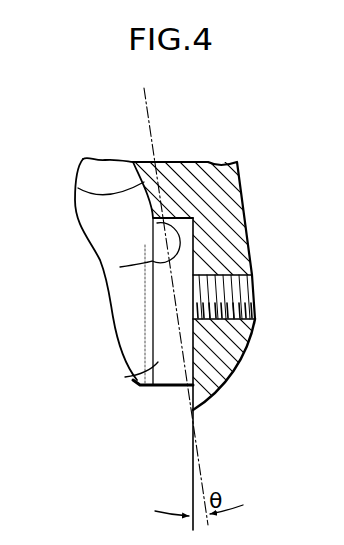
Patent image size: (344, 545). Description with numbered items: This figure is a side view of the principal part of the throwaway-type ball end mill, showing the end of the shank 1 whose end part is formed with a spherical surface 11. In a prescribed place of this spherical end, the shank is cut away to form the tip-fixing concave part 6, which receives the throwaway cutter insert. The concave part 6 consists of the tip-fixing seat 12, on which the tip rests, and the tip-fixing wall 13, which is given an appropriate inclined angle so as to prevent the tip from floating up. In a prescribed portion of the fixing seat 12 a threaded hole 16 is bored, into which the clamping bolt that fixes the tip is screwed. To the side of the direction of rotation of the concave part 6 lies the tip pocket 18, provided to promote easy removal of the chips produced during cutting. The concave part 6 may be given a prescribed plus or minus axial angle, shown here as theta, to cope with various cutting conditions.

The shank 1 is at (246, 209).
The tip-fixing concave part 6 is at (135, 382).
The spherical surface 11 is at (226, 381).
The tip-fixing seat 12 is at (193, 334).
The tip-fixing wall 13 is at (120, 267).
The threaded hole 16 is at (255, 313).
The tip pocket 18 is at (78, 188).